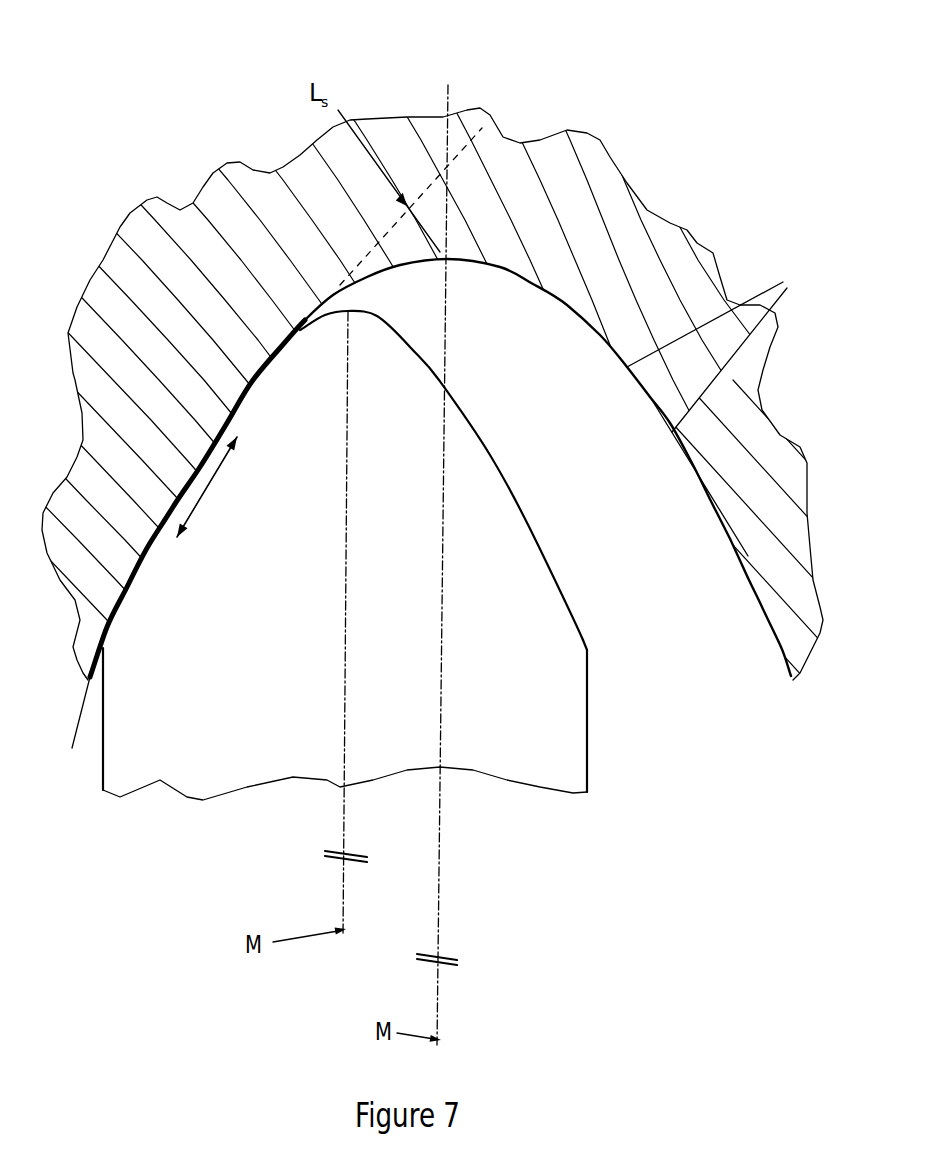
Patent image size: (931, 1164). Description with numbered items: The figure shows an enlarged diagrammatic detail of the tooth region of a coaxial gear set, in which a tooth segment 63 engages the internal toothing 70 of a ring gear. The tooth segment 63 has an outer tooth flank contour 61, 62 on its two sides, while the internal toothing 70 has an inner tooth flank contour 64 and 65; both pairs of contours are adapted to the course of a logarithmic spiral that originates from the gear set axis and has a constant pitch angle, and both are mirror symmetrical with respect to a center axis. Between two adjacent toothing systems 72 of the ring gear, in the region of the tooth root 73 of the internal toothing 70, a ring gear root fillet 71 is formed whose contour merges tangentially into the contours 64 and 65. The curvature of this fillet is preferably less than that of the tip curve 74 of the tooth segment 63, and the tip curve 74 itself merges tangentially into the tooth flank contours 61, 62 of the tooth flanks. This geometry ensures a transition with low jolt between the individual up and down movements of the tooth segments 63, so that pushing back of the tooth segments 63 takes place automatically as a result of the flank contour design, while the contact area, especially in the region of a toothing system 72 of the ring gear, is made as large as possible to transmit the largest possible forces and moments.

The outer tooth flank contour 61 is at (208, 372).
The outer tooth flank contour 62 is at (498, 453).
The tooth segment 63 is at (235, 688).
The inner tooth flank contour 64 is at (228, 412).
The inner tooth flank contour 65 is at (728, 399).
The internal toothing 70 is at (538, 306).
The ring gear root fillet 71 is at (432, 254).
The toothing system 72 is at (117, 563).
The tooth root 73 is at (462, 254).
The tip curve 74 is at (368, 311).